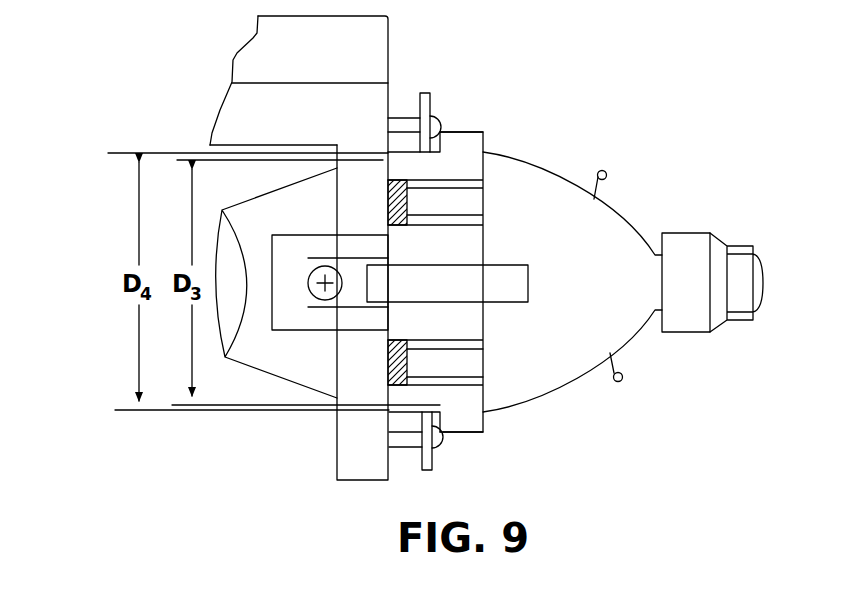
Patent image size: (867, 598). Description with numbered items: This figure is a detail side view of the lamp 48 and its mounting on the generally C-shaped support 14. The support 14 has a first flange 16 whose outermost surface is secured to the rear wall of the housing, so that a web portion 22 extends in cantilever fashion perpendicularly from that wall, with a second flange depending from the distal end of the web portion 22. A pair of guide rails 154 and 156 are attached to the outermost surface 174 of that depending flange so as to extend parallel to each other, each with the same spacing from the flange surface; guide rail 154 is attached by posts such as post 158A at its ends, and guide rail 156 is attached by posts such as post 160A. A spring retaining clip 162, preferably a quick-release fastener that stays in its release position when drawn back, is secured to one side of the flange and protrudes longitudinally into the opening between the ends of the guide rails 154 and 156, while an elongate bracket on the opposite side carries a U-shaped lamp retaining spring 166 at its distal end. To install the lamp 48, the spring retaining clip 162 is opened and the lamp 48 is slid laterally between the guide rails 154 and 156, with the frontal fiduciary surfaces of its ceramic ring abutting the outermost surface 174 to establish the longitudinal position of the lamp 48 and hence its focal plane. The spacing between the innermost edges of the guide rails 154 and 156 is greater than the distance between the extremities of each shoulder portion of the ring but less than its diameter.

The support 14 is at (373, 98).
The web portion 22 is at (297, 124).
The first flange 16 is at (358, 182).
The post 160A is at (408, 115).
The guide rail 156 is at (433, 100).
The post 158A is at (407, 447).
The guide rail 154 is at (432, 458).
The spring retaining clip 162 is at (498, 278).
The outermost surface 174 is at (445, 365).
The lamp retaining spring 166 is at (610, 170).
The lamp 48 is at (632, 337).